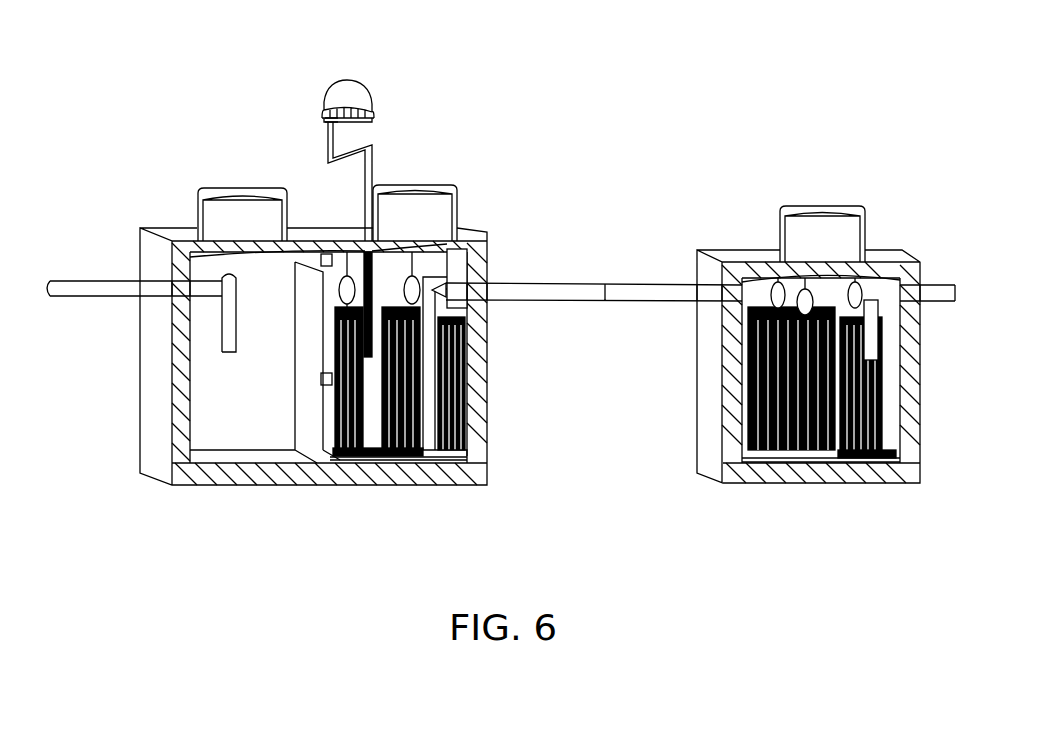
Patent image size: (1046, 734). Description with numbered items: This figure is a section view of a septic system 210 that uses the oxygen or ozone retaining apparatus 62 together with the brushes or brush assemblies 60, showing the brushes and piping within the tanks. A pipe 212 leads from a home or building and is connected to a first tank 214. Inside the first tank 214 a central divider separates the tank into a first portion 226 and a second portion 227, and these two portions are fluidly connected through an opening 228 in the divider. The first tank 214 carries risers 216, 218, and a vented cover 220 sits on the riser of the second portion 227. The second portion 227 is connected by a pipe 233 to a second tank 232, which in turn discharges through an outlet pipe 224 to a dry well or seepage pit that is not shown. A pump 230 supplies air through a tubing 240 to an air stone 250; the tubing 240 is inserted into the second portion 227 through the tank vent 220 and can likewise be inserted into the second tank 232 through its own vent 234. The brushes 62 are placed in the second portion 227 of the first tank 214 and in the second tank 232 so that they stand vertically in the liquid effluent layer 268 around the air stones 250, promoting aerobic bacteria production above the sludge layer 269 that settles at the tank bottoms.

The septic system 210 is at (668, 203).
The pipe 212 is at (78, 279).
The first tank 214 is at (160, 428).
The riser 216 is at (227, 190).
The riser 218 is at (418, 183).
The vented cover 220 is at (372, 170).
The outlet pipe 224 is at (935, 305).
The first portion 226 is at (207, 440).
The second portion 227 is at (440, 262).
The opening 228 is at (320, 379).
The pump 230 is at (350, 82).
The second tank 232 is at (900, 248).
The pipe 233 is at (566, 278).
The vent 234 is at (823, 207).
The tubing 240 is at (336, 136).
The air stone 250 is at (375, 460).
The liquid effluent layer 268 is at (470, 288).
The support plate 269 is at (440, 475).
The brush assemblies 60 is at (345, 410).
The oxygen or ozone retaining apparatus 62 is at (420, 462).